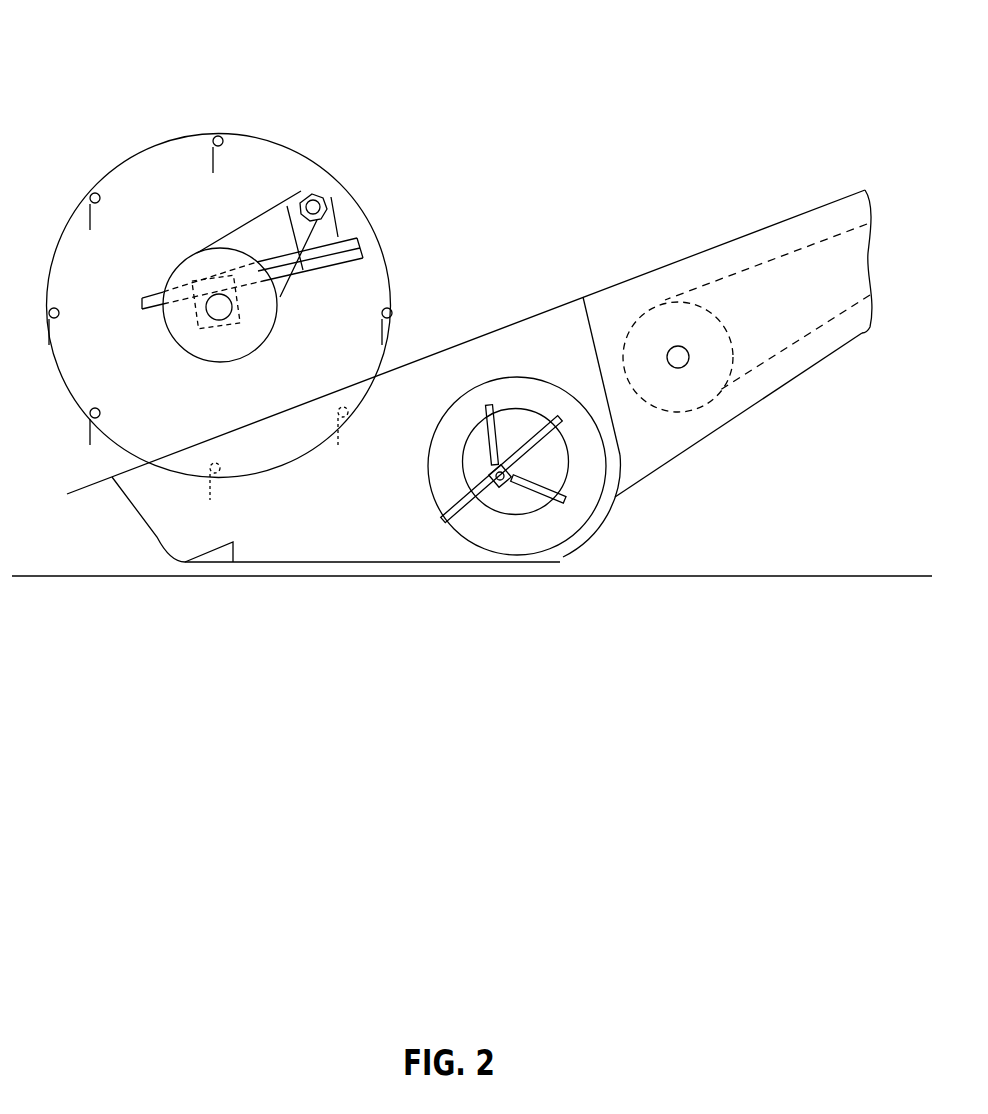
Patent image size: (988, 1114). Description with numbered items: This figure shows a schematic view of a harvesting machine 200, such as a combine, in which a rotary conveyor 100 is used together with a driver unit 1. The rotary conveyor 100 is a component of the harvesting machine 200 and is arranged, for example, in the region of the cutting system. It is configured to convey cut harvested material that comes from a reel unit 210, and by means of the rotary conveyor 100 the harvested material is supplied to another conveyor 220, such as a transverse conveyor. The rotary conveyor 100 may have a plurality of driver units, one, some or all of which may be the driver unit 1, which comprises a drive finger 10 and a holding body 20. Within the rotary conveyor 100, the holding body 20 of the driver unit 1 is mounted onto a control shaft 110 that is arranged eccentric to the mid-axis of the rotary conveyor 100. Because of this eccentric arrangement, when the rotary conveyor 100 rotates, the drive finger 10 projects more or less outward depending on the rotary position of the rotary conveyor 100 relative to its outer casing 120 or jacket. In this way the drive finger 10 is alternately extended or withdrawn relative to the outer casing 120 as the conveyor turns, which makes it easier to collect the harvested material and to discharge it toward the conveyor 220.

The harvesting machine 200 is at (603, 195).
The reel unit 210 is at (187, 128).
The conveyor 220 is at (753, 240).
The rotary conveyor 100 is at (549, 545).
The control shaft 110 is at (502, 487).
The outer casing 120 is at (518, 408).
The driver unit 1 is at (426, 456).
The drive finger 10 is at (428, 494).
The holding body 20 is at (486, 466).